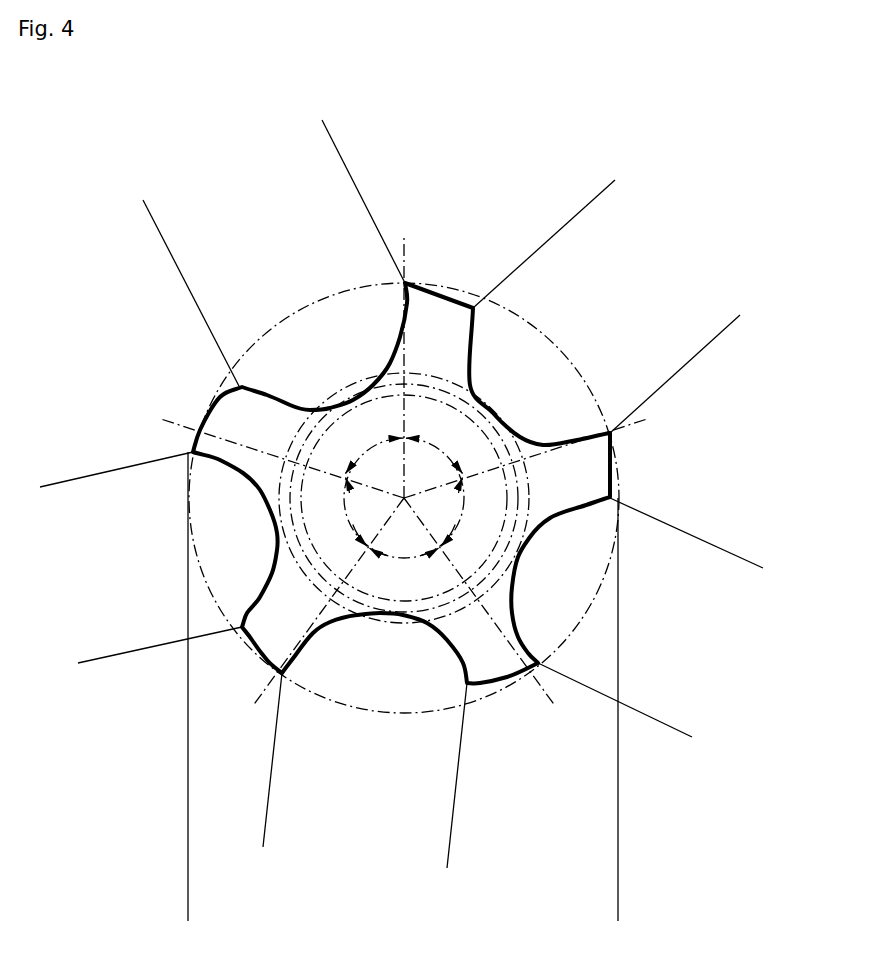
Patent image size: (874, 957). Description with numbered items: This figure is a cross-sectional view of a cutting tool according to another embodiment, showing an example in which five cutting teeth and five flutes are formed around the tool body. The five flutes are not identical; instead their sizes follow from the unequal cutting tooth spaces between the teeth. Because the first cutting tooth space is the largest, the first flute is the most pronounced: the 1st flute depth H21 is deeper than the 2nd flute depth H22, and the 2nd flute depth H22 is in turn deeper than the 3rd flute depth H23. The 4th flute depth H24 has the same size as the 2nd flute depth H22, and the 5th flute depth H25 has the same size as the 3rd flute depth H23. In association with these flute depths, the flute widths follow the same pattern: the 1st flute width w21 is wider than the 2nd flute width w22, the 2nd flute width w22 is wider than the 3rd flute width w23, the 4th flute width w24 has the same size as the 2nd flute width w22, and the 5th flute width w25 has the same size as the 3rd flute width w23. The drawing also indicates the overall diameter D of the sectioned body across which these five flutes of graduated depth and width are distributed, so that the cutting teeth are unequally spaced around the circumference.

The 1st flute width w21 is at (330, 135).
The 2nd flute width w22 is at (728, 325).
The 3rd flute width w23 is at (752, 565).
The 4th flute width w24 is at (267, 828).
The 5th flute width w25 is at (62, 483).
The 1st flute depth H21 is at (350, 397).
The 2nd flute depth H22 is at (565, 355).
The 3rd flute depth H23 is at (523, 555).
The 4th flute depth H24 is at (390, 617).
The 5th flute depth H25 is at (273, 528).
The outer diameter of the core D is at (188, 906).